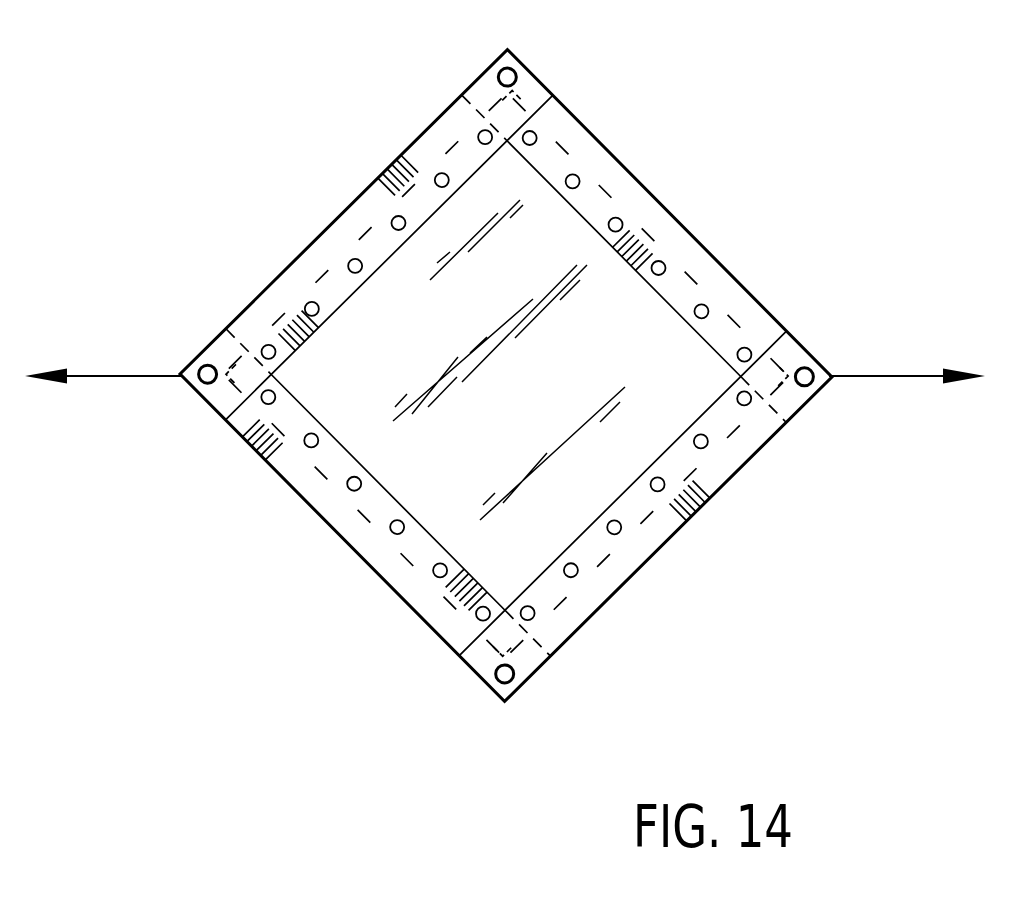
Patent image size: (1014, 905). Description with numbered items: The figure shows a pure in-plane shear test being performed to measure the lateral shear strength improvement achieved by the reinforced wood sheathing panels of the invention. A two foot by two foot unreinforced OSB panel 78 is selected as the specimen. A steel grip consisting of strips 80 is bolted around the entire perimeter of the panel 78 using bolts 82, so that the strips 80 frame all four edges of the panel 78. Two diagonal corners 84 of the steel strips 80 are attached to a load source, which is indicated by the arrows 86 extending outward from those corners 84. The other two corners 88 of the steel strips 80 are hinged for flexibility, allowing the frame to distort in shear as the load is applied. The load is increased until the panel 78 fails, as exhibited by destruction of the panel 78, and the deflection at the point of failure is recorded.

The unreinforced OSB panel 78 is at (714, 170).
The steel strips 80 is at (338, 222).
The bolts 82 is at (480, 135).
The diagonal corners 84 is at (208, 402).
The arrows 86 is at (110, 377).
The other two corners 88 is at (488, 78).